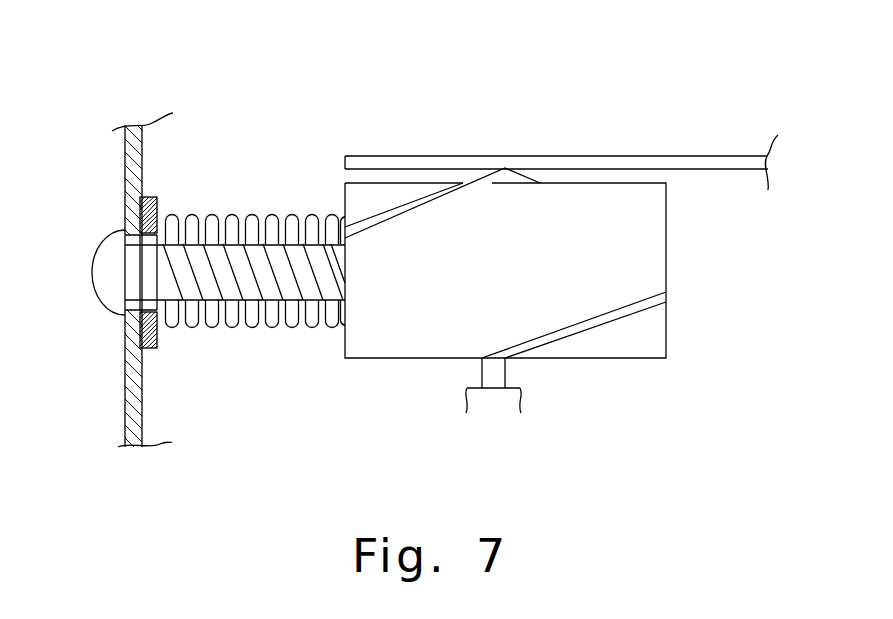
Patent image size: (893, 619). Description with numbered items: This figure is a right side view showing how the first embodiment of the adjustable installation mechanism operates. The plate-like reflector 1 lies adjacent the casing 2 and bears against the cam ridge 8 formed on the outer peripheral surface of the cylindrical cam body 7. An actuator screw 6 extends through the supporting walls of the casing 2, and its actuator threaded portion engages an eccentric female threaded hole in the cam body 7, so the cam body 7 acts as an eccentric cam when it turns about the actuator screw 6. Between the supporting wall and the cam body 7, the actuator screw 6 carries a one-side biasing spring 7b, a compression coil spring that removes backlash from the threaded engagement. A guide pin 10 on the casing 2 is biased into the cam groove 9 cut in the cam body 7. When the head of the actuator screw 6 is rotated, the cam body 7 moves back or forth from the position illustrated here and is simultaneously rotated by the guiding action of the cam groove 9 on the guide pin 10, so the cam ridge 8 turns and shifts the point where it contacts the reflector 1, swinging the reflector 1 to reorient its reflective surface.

The reflector 1 is at (632, 166).
The casing 2 is at (125, 393).
The actuator screw 6 is at (238, 252).
The cylindrical cam body 7 is at (645, 267).
The one-side biasing spring 7b is at (205, 328).
The cam ridge 8 is at (442, 198).
The cam groove 9 is at (580, 325).
The guide pin 10 is at (485, 375).